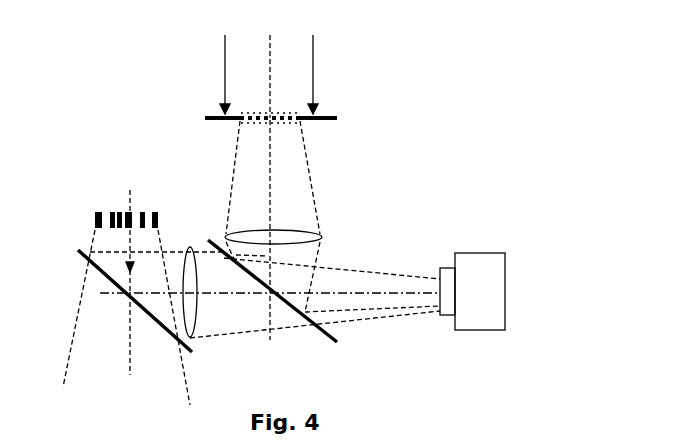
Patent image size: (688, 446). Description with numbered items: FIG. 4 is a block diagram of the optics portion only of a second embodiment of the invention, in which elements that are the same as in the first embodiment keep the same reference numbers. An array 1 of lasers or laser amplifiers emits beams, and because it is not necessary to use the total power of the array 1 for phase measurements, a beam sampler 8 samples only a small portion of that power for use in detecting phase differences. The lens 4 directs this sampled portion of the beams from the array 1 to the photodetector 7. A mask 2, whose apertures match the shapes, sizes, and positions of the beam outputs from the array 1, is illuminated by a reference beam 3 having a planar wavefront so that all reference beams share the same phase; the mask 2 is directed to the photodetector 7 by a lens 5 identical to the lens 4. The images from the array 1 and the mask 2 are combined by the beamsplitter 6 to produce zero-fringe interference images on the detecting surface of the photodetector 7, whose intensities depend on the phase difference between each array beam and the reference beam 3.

The array 1 is at (113, 221).
The mask 2 is at (284, 114).
The reference beam 3 is at (279, 74).
The lens 4 is at (189, 279).
The lens 5 is at (284, 238).
The beamsplitter 6 is at (282, 295).
The photodetector 7 is at (472, 291).
The beam sampler 8 is at (147, 314).